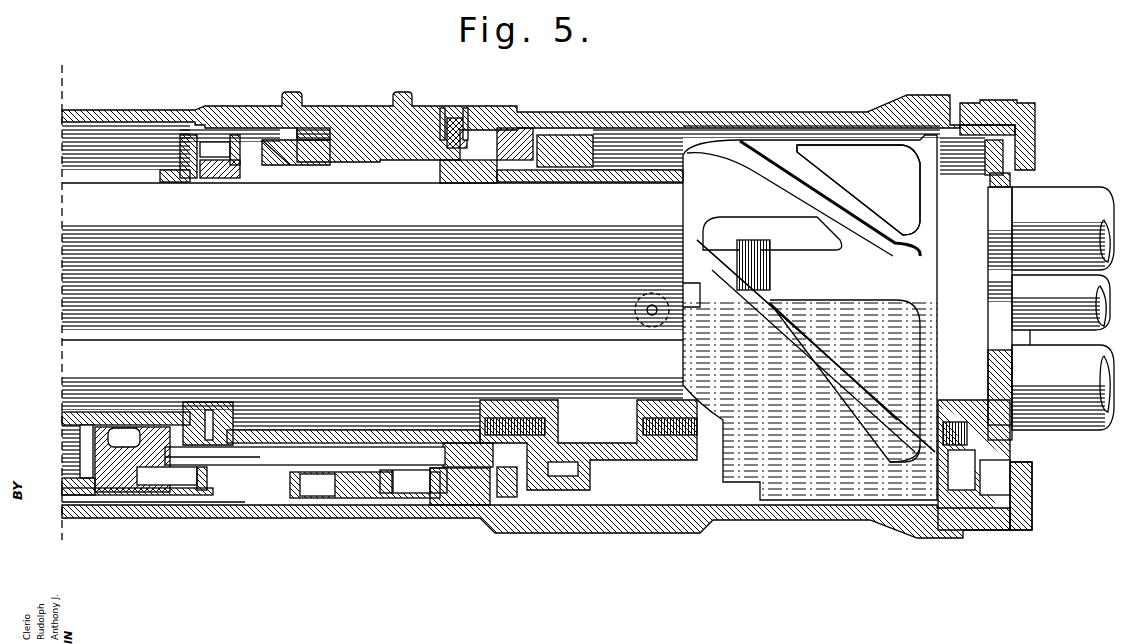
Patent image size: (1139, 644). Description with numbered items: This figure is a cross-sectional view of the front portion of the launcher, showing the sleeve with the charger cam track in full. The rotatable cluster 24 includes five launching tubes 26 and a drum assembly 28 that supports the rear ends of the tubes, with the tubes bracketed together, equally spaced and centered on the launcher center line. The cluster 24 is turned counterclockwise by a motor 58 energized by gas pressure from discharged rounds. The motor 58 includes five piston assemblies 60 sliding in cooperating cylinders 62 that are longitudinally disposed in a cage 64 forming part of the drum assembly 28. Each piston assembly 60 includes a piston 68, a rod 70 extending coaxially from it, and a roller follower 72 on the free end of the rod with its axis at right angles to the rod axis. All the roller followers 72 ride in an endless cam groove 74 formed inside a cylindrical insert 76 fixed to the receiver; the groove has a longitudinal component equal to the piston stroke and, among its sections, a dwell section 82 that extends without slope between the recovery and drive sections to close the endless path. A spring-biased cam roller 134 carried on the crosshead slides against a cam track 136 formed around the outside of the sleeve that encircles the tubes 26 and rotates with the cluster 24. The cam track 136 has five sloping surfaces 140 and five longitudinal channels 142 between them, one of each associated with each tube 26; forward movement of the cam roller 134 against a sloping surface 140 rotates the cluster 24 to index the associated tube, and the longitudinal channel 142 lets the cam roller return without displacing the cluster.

The rotatable cluster 24 is at (650, 130).
The launching tubes 26 is at (705, 317).
The drum assembly 28 is at (577, 477).
The motor 58 is at (163, 495).
The piston assemblies 60 is at (72, 441).
The cylinders 62 is at (73, 483).
The cage 64 is at (68, 416).
The piston 68 is at (103, 433).
The rod 70 is at (277, 453).
The roller follower 72 is at (412, 485).
The cam groove 74 is at (325, 158).
The cylindrical insert 76 is at (362, 495).
The dwell section 82 is at (324, 150).
The cam roller 134 is at (660, 330).
The cam track 136 is at (812, 383).
The sloping surfaces 140 is at (788, 350).
The longitudinal channels 142 is at (825, 275).